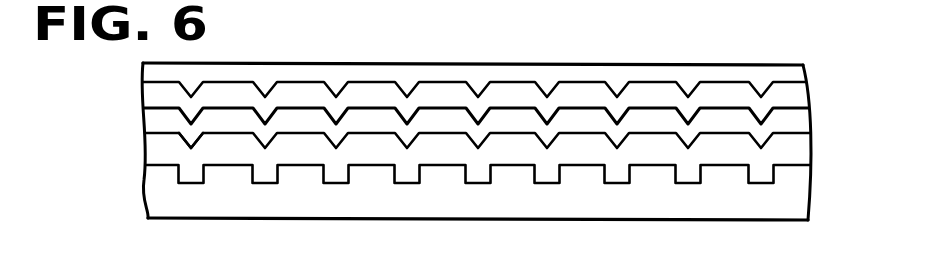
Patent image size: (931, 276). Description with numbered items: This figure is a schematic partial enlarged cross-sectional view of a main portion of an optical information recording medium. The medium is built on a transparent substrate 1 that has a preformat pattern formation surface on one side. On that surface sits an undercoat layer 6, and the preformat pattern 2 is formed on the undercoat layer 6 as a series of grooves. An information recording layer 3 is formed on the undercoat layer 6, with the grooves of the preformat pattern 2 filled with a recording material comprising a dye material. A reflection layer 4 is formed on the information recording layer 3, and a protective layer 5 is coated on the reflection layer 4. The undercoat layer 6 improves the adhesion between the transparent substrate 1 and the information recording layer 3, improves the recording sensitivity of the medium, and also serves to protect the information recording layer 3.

The transparent substrate 1 is at (787, 202).
The preformat pattern 2 is at (190, 139).
The information recording layer 3 is at (797, 122).
The reflection layer 4 is at (797, 99).
The protective layer 5 is at (782, 75).
The undercoat layer 6 is at (793, 155).